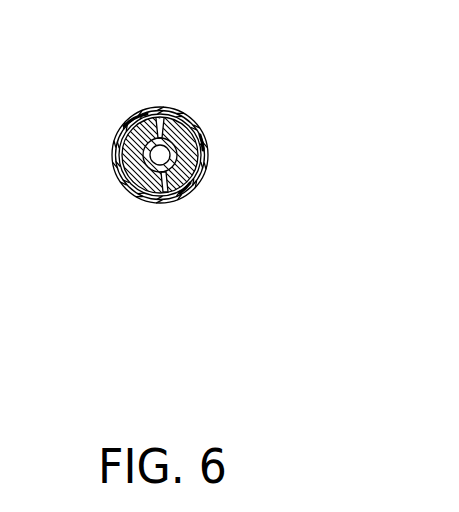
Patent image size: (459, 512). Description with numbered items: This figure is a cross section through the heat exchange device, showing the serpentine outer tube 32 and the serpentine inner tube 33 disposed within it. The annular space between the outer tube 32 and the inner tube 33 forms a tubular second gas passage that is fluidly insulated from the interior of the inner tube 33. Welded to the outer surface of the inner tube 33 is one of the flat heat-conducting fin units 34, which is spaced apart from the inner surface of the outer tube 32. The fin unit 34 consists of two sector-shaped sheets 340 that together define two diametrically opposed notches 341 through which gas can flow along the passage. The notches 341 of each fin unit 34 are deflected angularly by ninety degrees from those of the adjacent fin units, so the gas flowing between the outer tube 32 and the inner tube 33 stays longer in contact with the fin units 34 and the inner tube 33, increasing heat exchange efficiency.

The serpentine outer tube 32 is at (160, 122).
The serpentine inner tube 33 is at (165, 178).
The heat-conducting fin unit 34 is at (196, 188).
The sector-shaped sheet 340 is at (187, 120).
The notch 341 is at (290, 92).